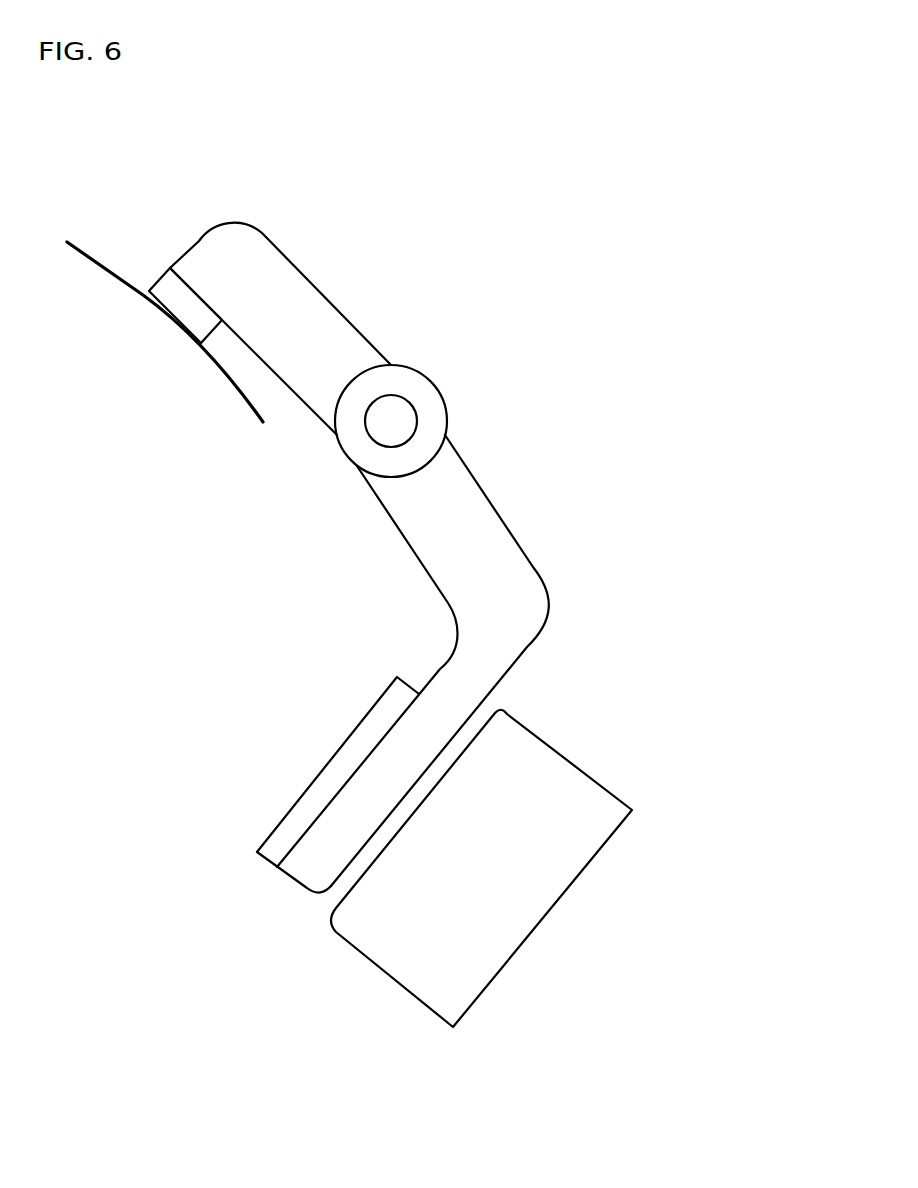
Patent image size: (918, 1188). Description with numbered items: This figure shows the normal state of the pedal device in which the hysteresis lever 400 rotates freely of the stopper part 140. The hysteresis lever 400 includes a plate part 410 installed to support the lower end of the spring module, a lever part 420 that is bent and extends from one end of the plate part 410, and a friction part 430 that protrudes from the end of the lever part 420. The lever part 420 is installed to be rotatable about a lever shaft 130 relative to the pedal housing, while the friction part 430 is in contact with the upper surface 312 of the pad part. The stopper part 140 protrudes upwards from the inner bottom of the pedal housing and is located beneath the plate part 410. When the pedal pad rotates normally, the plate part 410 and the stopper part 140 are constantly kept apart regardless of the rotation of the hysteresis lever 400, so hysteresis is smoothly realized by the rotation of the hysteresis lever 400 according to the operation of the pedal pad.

The upper surface 312 is at (116, 273).
The friction part 430 is at (191, 312).
The lever part 420 is at (342, 342).
The lever shaft 130 is at (402, 418).
The hysteresis lever 400 is at (533, 562).
The plate part 410 is at (393, 762).
The stopper part 140 is at (503, 882).